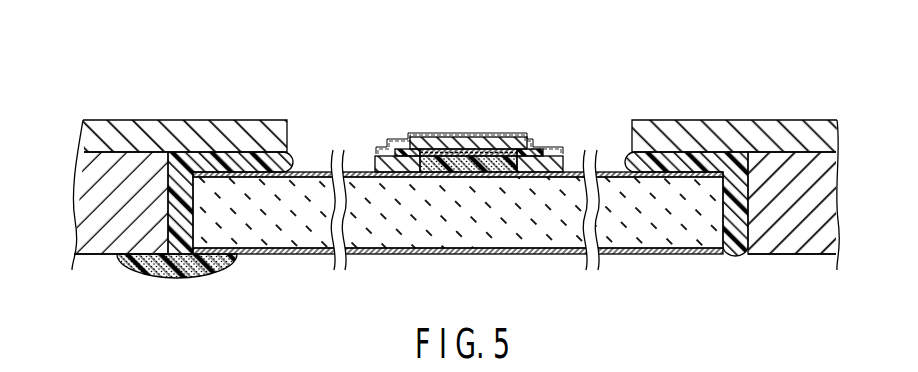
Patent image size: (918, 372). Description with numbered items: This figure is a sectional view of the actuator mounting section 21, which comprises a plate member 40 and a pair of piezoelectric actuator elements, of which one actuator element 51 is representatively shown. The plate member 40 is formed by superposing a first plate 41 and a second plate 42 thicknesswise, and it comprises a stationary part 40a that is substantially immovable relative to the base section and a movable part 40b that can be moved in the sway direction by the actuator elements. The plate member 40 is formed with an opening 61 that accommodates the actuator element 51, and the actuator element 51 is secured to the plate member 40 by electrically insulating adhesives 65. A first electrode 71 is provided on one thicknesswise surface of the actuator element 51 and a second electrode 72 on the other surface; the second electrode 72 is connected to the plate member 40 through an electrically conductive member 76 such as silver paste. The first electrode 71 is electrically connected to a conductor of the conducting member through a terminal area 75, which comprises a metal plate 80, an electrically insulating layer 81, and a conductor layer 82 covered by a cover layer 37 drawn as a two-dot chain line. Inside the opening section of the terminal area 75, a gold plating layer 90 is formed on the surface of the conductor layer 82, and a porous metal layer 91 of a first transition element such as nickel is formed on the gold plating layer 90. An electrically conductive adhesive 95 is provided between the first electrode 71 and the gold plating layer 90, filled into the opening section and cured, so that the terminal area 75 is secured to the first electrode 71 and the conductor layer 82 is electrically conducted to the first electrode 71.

The actuator mounting section 21 is at (358, 66).
The cover layer 37 is at (470, 128).
The plate member 40 is at (123, 77).
The stationary part 40a is at (127, 215).
The movable part 40b is at (766, 225).
The first plate 41 is at (88, 181).
The second plate 42 is at (105, 135).
The actuator element 51 is at (450, 240).
The opening 61 is at (621, 104).
The electrically insulating adhesive 65 is at (243, 160).
The first electrode 71 is at (352, 172).
The second electrode 72 is at (363, 255).
The terminal area 75 is at (491, 100).
The electrically conductive member 76 is at (203, 276).
The metal plate 80 is at (557, 156).
The electrically insulating layer 81 is at (544, 148).
The conductor layer 82 is at (452, 140).
The gold plating layer 90 is at (503, 150).
The porous metal layer 91 is at (500, 165).
The electrically conductive adhesive 95 is at (423, 136).